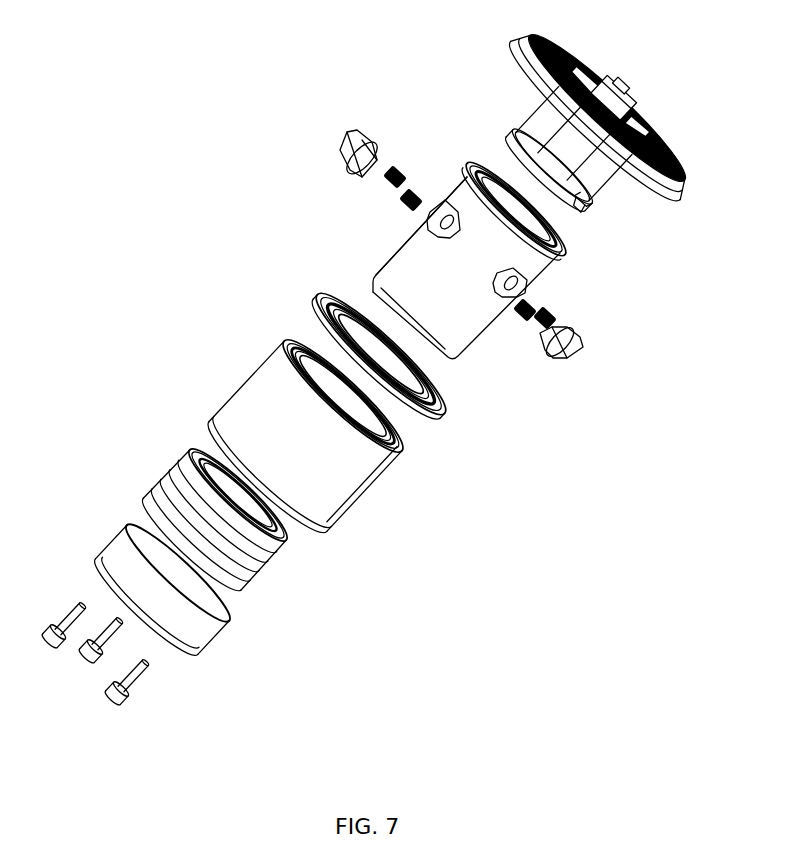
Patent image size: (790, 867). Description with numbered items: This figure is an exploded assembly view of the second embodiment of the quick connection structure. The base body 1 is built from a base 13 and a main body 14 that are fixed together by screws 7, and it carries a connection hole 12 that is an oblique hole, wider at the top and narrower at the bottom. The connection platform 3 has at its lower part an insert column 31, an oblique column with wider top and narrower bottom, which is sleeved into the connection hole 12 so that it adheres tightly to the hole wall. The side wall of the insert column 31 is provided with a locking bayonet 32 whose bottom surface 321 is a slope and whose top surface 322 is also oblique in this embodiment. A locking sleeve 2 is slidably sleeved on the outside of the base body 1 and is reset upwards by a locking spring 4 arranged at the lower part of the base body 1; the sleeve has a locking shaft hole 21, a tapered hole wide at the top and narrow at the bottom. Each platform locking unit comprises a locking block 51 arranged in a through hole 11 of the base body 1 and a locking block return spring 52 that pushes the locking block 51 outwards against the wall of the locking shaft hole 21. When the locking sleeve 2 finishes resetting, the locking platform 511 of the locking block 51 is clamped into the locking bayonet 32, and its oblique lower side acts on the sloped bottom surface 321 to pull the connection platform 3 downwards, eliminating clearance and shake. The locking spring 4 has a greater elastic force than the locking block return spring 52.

The base body 1 is at (434, 314).
The through hole 11 is at (424, 227).
The connection hole 12 is at (550, 250).
The base 13 is at (115, 565).
The main body 14 is at (410, 283).
The locking sleeve 2 is at (312, 450).
The locking shaft hole 21 is at (305, 366).
The connection platform 3 is at (618, 108).
The insert column 31 is at (552, 137).
The locking bayonet 32 is at (588, 198).
The bottom surface 321 is at (576, 204).
The top surface 322 is at (624, 118).
The locking spring 4 is at (260, 568).
The locking block 51 is at (466, 266).
The locking platform 511 is at (383, 153).
The locking block return spring 52 is at (407, 202).
The screw 7 is at (133, 677).